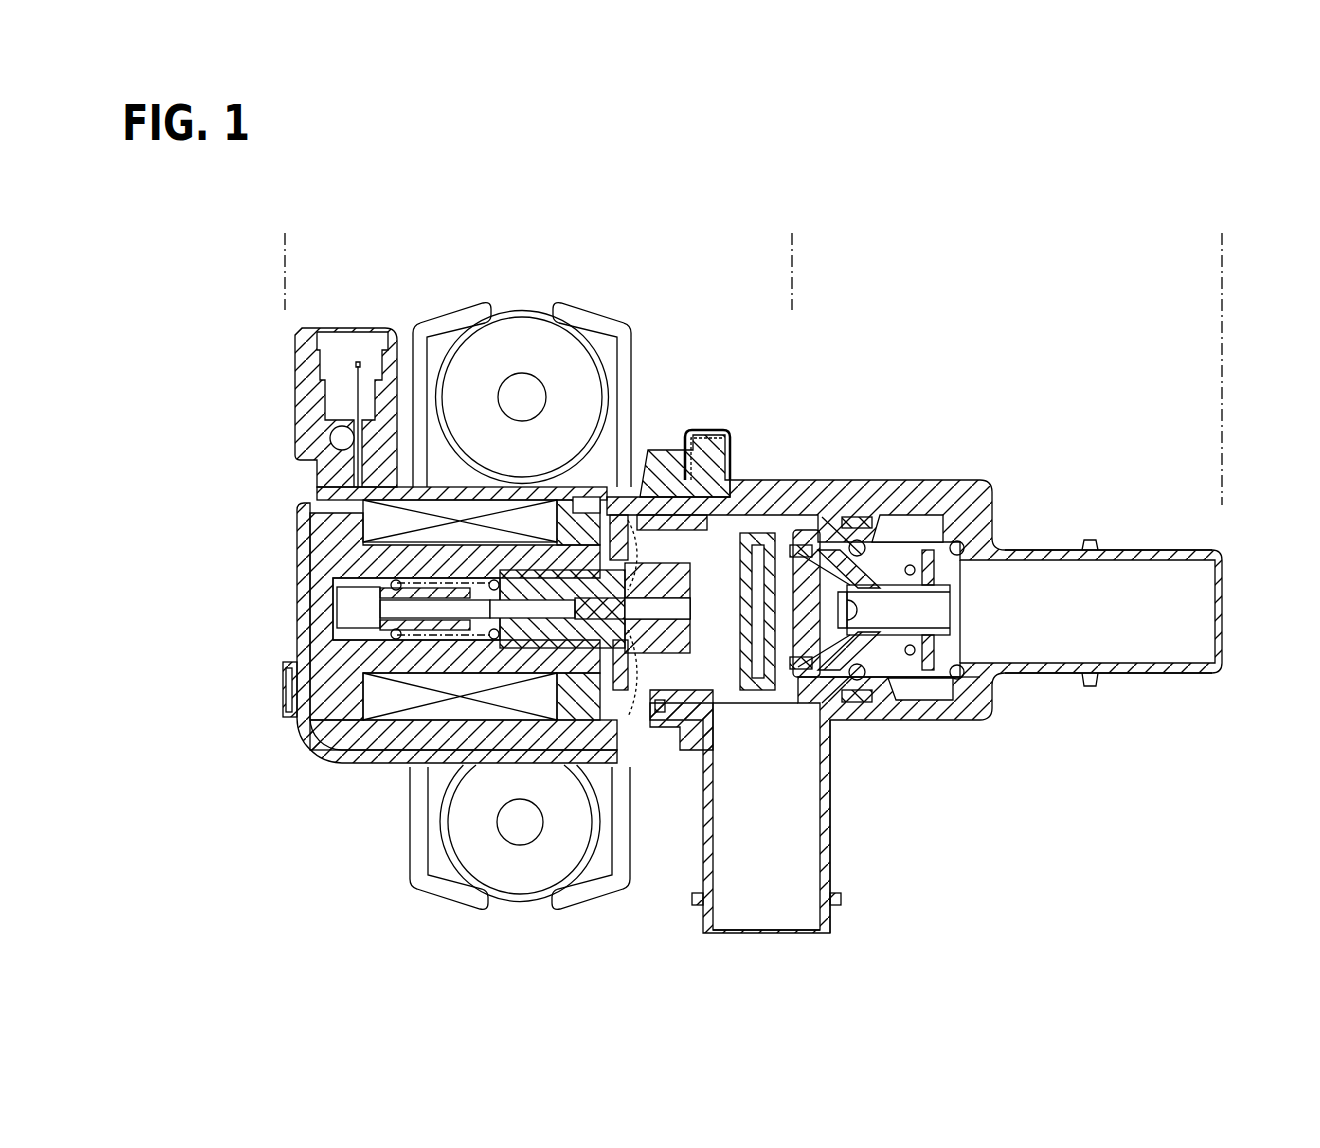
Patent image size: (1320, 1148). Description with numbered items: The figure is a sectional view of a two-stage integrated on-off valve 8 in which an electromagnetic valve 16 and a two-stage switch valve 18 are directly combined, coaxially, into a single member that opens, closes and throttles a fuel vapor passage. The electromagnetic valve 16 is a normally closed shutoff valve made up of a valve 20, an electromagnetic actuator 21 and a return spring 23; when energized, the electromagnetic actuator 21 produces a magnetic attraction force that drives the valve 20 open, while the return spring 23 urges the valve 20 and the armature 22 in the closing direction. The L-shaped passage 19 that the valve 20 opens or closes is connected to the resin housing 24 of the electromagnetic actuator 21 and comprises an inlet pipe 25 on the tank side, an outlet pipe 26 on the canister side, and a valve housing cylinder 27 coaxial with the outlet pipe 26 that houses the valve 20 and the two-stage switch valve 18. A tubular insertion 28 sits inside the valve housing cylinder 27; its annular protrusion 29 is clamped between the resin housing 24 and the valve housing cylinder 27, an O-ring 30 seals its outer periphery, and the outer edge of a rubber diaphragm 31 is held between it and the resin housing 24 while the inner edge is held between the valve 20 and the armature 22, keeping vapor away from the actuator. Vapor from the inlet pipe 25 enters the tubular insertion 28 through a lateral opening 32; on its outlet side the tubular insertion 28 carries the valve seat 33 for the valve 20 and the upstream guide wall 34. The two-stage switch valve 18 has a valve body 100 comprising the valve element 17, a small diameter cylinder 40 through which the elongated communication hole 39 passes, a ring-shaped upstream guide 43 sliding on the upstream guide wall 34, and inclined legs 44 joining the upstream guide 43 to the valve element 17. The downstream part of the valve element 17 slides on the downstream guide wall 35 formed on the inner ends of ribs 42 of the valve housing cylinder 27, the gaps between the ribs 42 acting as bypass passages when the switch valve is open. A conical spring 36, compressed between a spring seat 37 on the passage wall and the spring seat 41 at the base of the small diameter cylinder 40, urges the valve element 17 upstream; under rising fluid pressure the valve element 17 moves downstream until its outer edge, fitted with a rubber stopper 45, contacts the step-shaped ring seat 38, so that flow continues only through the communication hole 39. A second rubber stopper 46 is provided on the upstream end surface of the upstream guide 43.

The two-stage integrated on-off valve 8 is at (1242, 293).
The electromagnetic valve 16 is at (792, 247).
The valve element 17 is at (883, 605).
The two-stage switch valve 18 is at (792, 247).
The L-shaped passage 19 is at (870, 807).
The valve 20 is at (740, 540).
The electromagnetic actuator 21 is at (376, 822).
The armature 22 is at (335, 497).
The return spring 23 is at (385, 585).
The resin housing 24 is at (322, 768).
The inlet pipe 25 is at (828, 755).
The outlet pipe 26 is at (1118, 676).
The valve housing cylinder 27 is at (922, 713).
The tubular insertion 28 is at (692, 432).
The annular protrusion 29 is at (640, 495).
The O-ring 30 is at (812, 725).
The diaphragm 31 is at (647, 725).
The opening 32 is at (740, 706).
The valve seat 33 is at (787, 706).
The upstream guide wall 34 is at (853, 535).
The downstream guide wall 35 is at (982, 497).
The spring 36 is at (912, 572).
The spring seat 37 is at (977, 547).
The ring seat 38 is at (928, 667).
The communication hole 39 is at (867, 535).
The small diameter cylinder 40 is at (932, 597).
The spring seat 41 is at (885, 700).
The ribs 42 is at (918, 530).
The upstream guide 43 is at (806, 525).
The legs 44 is at (827, 535).
The rubber stopper 45 is at (958, 543).
The rubber stopper 46 is at (798, 540).
The valve body 100 is at (883, 558).